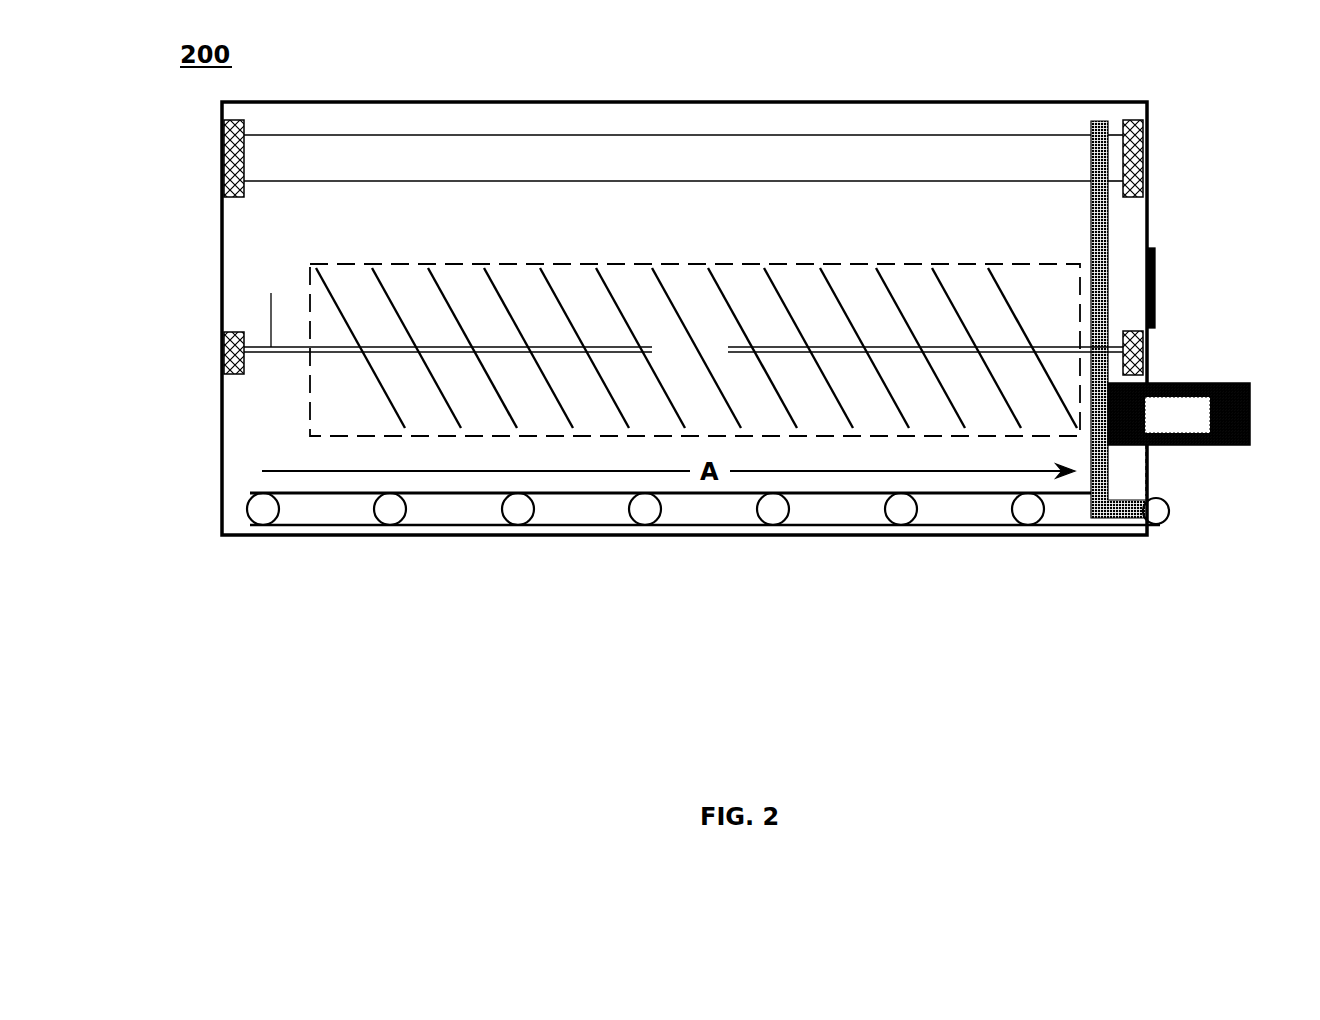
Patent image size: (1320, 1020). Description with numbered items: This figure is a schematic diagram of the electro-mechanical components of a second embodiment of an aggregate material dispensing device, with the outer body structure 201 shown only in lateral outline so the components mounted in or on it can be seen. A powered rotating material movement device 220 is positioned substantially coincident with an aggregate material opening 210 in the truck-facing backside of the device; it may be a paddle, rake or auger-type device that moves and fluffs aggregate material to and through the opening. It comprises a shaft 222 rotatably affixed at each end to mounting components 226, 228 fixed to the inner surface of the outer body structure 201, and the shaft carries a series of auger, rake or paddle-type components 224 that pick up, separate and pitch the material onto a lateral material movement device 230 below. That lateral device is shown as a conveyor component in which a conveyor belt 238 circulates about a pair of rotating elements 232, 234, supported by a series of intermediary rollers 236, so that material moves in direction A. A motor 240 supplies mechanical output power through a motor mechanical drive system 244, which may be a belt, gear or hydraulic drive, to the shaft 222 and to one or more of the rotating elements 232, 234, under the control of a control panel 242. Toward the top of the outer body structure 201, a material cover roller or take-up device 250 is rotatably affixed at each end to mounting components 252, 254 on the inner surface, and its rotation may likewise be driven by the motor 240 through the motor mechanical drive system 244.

The outer body structure 201 is at (222, 478).
The aggregate material opening 210 is at (681, 350).
The rotating material movement device 220 is at (683, 346).
The shaft 222 is at (268, 306).
The auger, rake or paddle-type components 224 is at (1075, 255).
The mounting component 226 is at (222, 350).
The mounting component 228 is at (1147, 350).
The lateral material movement device 230 is at (1160, 485).
The rotating element 232 is at (1145, 523).
The rotating element 234 is at (268, 512).
The intermediary rollers 236 is at (390, 509).
The conveyor belt 238 is at (335, 527).
The motor 240 is at (1179, 439).
The control panel 242 is at (1155, 288).
The motor mechanical drive system 244 is at (1100, 222).
The material cover roller or take-up device 250 is at (683, 158).
The mounting component 252 is at (222, 158).
The mounting component 254 is at (1147, 158).